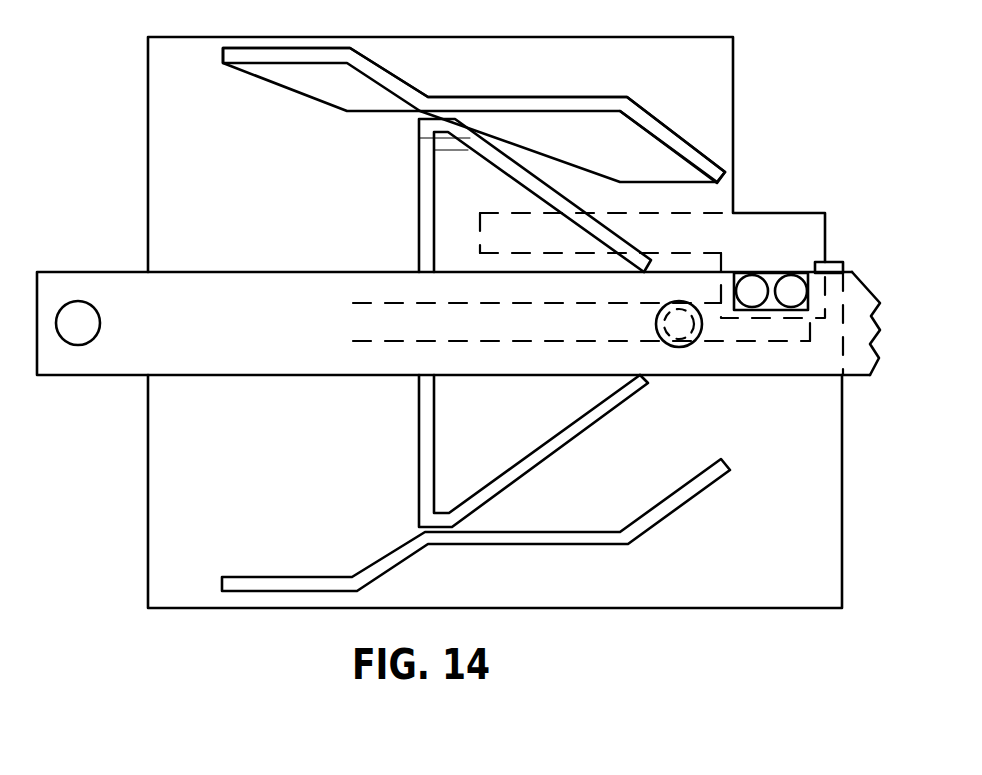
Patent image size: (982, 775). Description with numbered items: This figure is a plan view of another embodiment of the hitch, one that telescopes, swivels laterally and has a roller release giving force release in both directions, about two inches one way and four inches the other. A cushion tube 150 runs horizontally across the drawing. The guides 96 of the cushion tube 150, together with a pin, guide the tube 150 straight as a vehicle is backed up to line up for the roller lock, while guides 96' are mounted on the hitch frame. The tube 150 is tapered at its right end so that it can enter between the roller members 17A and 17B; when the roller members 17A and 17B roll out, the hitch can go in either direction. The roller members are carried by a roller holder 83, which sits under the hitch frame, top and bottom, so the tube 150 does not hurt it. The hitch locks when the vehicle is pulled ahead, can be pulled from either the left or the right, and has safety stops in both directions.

The cushion tube 150 is at (102, 375).
The guides 96 is at (491, 323).
The guides 96' is at (476, 525).
The roller member 17A is at (752, 274).
The roller member 17B is at (792, 274).
The roller holder 83 is at (838, 254).